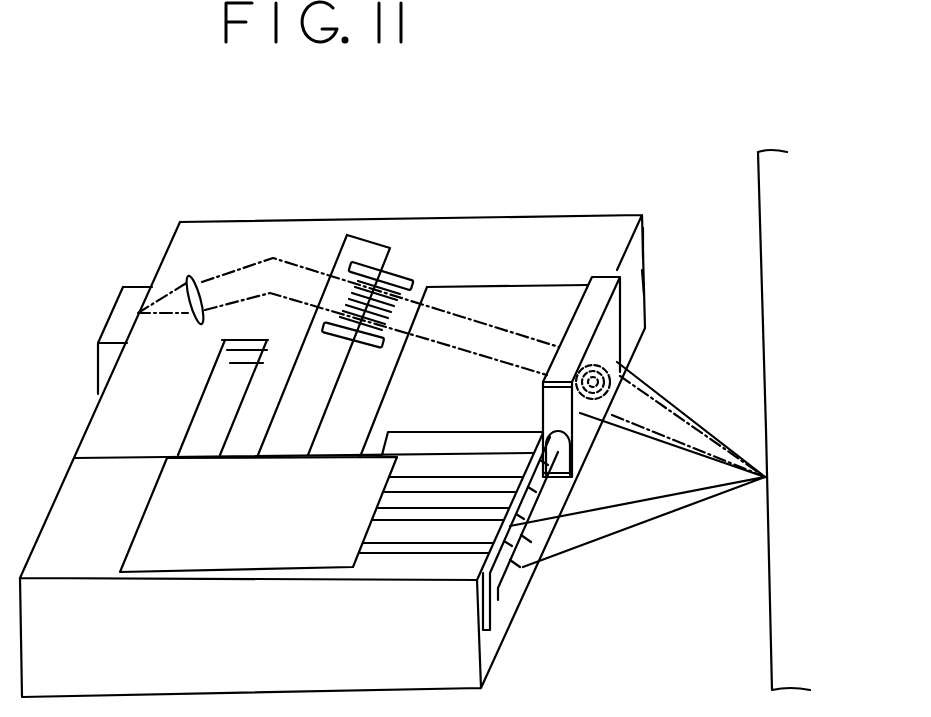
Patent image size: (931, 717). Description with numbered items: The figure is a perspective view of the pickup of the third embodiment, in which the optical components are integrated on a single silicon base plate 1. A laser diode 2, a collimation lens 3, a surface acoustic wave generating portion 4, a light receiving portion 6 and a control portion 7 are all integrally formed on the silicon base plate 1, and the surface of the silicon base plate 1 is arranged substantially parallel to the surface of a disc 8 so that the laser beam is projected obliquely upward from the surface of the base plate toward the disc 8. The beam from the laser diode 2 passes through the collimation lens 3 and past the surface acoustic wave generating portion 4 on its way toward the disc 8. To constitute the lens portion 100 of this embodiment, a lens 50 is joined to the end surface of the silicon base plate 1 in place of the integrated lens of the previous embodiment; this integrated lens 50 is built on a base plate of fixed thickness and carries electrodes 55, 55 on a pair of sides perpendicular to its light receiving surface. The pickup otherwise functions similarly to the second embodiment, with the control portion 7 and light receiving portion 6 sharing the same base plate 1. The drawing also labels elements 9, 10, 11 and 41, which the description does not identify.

The silicon base plate 1 is at (488, 648).
The laser diode 2 is at (110, 318).
The collimation lens 3 is at (198, 322).
The surface acoustic wave generating portion 4 is at (248, 338).
The light receiving portion 6 is at (497, 603).
The control portion 7 is at (173, 580).
The disc 8 is at (768, 625).
The side wall 9 is at (640, 283).
The housing 10 is at (640, 243).
The mirror 11 is at (387, 304).
The mirror holder 41 is at (405, 268).
The lens 50 is at (610, 328).
The electrodes 55 is at (595, 288).
The lens portion 100 is at (502, 243).